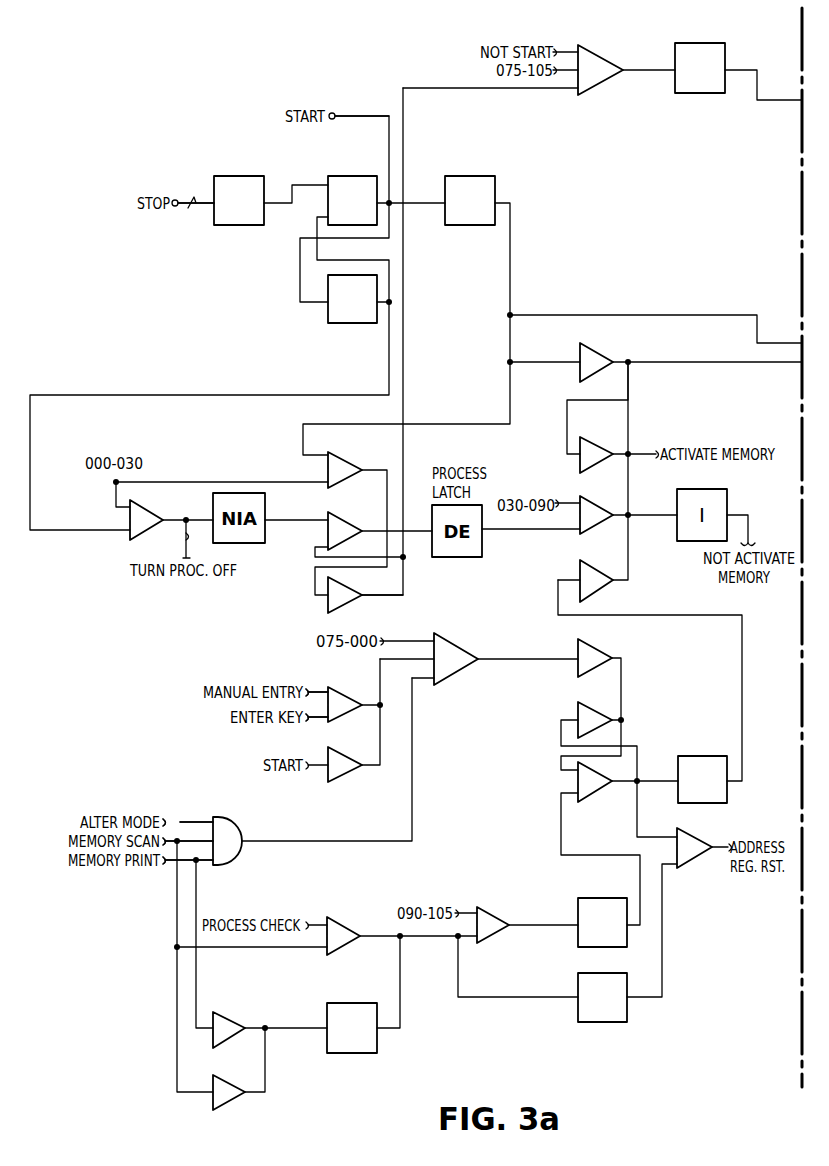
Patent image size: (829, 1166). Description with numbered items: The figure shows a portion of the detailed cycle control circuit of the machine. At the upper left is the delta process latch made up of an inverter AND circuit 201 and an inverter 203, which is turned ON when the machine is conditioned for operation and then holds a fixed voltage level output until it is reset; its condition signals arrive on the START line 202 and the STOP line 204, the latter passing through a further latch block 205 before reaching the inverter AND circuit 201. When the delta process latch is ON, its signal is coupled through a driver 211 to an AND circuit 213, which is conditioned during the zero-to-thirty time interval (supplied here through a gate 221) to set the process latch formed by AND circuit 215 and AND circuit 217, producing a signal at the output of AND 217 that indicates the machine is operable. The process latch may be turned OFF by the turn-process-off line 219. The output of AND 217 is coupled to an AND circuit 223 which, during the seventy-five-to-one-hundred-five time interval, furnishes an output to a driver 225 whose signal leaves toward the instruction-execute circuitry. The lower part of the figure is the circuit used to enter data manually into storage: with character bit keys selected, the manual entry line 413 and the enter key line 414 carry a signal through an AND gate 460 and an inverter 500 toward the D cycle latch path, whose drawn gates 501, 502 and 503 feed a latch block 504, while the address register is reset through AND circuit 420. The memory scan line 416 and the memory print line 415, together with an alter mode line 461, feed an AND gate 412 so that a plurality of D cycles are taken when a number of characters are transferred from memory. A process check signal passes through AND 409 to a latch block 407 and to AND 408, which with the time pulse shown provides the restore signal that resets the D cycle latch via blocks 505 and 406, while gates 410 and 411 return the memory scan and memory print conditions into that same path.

The inverter AND circuit 201 is at (361, 168).
The condition-signal line 202 is at (360, 115).
The inverter 203 is at (328, 314).
The condition-signal line 204 is at (193, 215).
The latch 205 is at (236, 176).
The driver 211 is at (457, 176).
The AND circuit 213 is at (343, 459).
The AND circuit 215 is at (343, 521).
The AND circuit 217 is at (340, 591).
The condition-signal line 219 is at (186, 544).
The inverter 221 is at (160, 505).
The AND circuit 223 is at (593, 57).
The driver 225 is at (725, 58).
The latch 406 is at (606, 1022).
The latch 407 is at (355, 1053).
The AND circuit 408 is at (490, 919).
The AND circuit 409 is at (347, 941).
The inverter 410 is at (240, 1011).
The inverter 411 is at (228, 1085).
The AND gate 412 is at (237, 833).
The manual entry line 413 is at (316, 691).
The enter key line 414 is at (318, 719).
The memory scan line 415 is at (174, 865).
The memory print line 416 is at (198, 838).
The AND circuit 420 is at (689, 861).
The inverter 460 is at (357, 691).
The alter mode line 461 is at (177, 823).
The inverter 500 is at (455, 644).
The inverter 501 is at (590, 648).
The inverter 502 is at (580, 707).
The inverter 503 is at (578, 781).
The latch 504 is at (693, 757).
The latch 505 is at (598, 898).